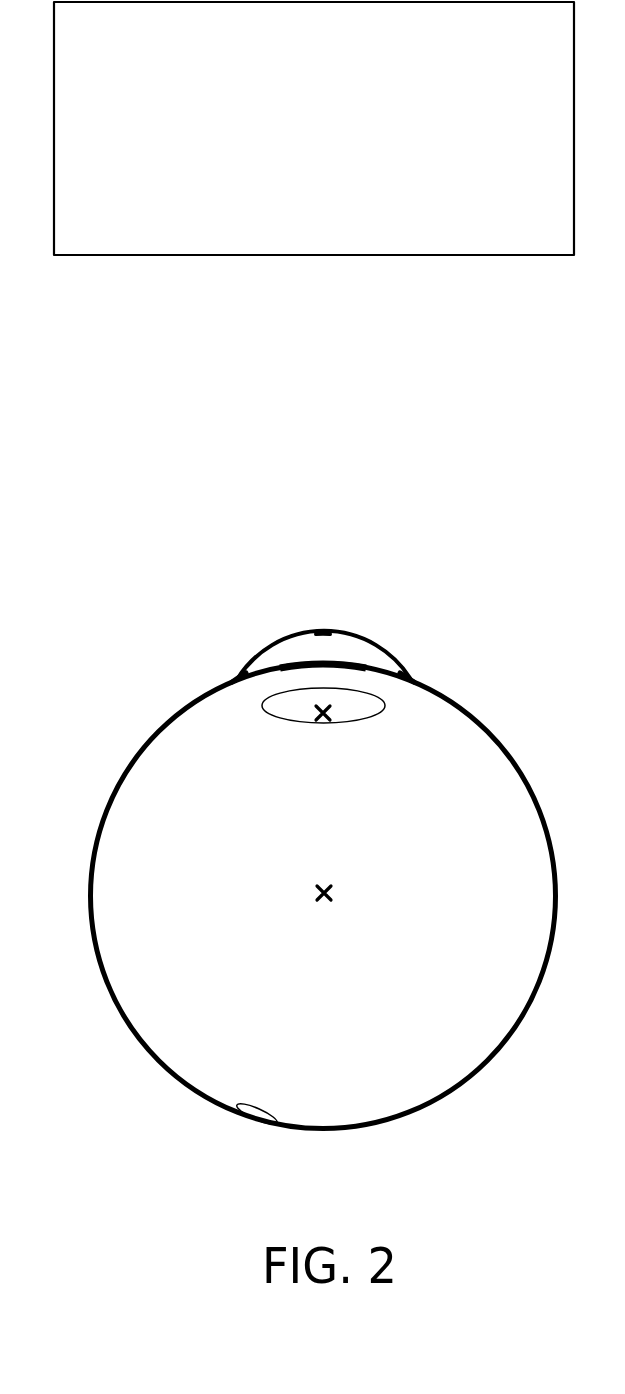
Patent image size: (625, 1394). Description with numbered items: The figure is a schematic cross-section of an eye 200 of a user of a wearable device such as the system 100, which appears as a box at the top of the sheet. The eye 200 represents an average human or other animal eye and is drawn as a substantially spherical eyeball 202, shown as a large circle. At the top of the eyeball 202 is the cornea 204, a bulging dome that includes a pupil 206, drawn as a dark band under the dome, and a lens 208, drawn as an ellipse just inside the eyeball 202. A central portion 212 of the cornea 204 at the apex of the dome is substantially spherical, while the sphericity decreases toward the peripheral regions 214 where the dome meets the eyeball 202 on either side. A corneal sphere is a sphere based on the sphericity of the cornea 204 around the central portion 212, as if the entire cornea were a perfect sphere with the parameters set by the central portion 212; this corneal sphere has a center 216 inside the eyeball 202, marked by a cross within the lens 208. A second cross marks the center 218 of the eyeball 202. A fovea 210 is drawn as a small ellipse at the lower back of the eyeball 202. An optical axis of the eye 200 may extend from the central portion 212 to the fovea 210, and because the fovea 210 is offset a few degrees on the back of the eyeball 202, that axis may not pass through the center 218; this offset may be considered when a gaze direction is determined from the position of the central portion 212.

The system 100 is at (148, 76).
The eye 200 is at (492, 474).
The eyeball 202 is at (127, 1029).
The cornea 204 is at (362, 636).
The pupil 206 is at (333, 663).
The lens 208 is at (362, 721).
The fovea 210 is at (248, 1105).
The central portion 212 is at (322, 632).
The peripheral regions 214 is at (243, 671).
The center 216 is at (312, 716).
The center 218 is at (314, 893).